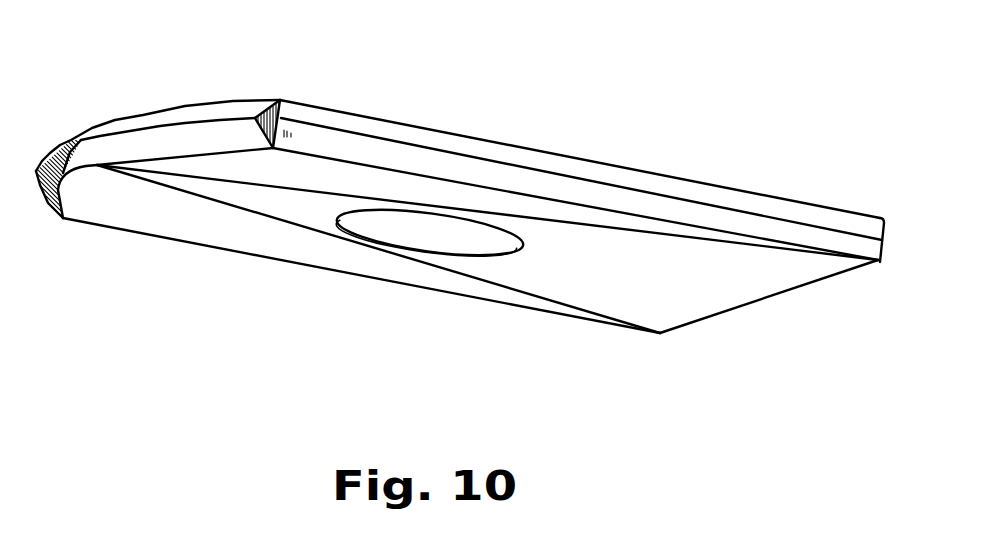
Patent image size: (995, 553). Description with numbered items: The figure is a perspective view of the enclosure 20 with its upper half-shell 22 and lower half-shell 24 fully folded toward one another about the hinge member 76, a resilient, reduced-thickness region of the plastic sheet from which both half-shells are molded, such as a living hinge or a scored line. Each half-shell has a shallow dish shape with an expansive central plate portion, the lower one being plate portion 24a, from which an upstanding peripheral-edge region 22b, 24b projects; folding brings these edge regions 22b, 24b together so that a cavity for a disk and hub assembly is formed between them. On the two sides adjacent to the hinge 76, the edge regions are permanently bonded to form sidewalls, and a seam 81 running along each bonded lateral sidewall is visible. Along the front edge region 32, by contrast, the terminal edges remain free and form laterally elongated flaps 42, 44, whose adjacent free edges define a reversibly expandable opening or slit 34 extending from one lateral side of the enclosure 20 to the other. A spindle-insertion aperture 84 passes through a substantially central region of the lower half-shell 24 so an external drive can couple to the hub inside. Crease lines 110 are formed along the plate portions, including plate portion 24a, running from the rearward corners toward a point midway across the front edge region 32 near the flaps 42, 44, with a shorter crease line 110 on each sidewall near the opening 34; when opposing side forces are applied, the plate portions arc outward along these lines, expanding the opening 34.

The enclosure 20 is at (278, 358).
The upper half-shell 22 is at (500, 138).
The upstanding peripheral-edge region of upper half-shell 22b is at (852, 222).
The lower half-shell 24 is at (420, 303).
The expansive central plate portion of lower half-shell 24a is at (492, 298).
The upstanding peripheral-edge region of lower half-shell 24b is at (607, 197).
The front edge region 32 is at (105, 110).
The reversibly-expandable opening 34 is at (182, 122).
The upper flap 42 is at (145, 117).
The lower flap 44 is at (86, 152).
The hinge member 76 is at (888, 246).
The seam 81 is at (407, 147).
The spindle-insertion aperture 84 is at (370, 234).
The crease lines 110 is at (282, 117).